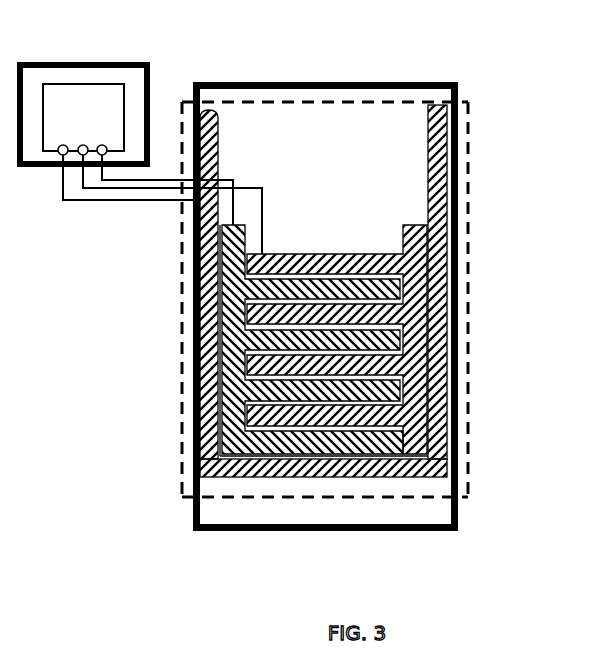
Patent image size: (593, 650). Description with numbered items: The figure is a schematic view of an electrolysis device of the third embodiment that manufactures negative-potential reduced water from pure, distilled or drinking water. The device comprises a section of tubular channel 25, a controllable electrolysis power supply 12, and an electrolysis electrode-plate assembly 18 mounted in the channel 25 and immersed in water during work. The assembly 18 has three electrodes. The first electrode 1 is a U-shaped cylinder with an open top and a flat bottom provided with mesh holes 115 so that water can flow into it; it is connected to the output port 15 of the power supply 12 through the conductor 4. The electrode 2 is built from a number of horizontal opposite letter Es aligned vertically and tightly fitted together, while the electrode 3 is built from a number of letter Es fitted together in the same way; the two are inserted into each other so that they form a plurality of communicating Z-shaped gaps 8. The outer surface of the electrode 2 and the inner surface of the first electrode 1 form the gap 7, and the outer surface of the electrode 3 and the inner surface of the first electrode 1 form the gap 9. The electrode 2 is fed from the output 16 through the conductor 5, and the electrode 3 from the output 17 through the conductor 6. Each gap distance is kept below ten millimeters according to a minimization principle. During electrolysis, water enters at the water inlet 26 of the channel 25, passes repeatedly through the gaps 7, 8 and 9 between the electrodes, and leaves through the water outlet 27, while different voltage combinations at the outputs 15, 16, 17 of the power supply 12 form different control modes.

The first electrode 1 is at (458, 80).
The electrode 2 is at (418, 222).
The electrode 3 is at (414, 416).
The conductor 4 is at (63, 178).
The conductor 5 is at (83, 186).
The conductor 6 is at (113, 182).
The gap 7 is at (422, 315).
The Z-shaped gaps 8 is at (205, 350).
The gap 9 is at (200, 430).
The controllable electrolysis power supply 12 is at (78, 62).
The output port 15 is at (66, 146).
The output 16 is at (86, 146).
The output 17 is at (105, 146).
The electrolysis electrode-plate assembly 18 is at (367, 100).
The tubular channel 25 is at (460, 445).
The water inlet 26 is at (320, 82).
The water outlet 27 is at (382, 503).
The mesh holes 115 is at (392, 477).